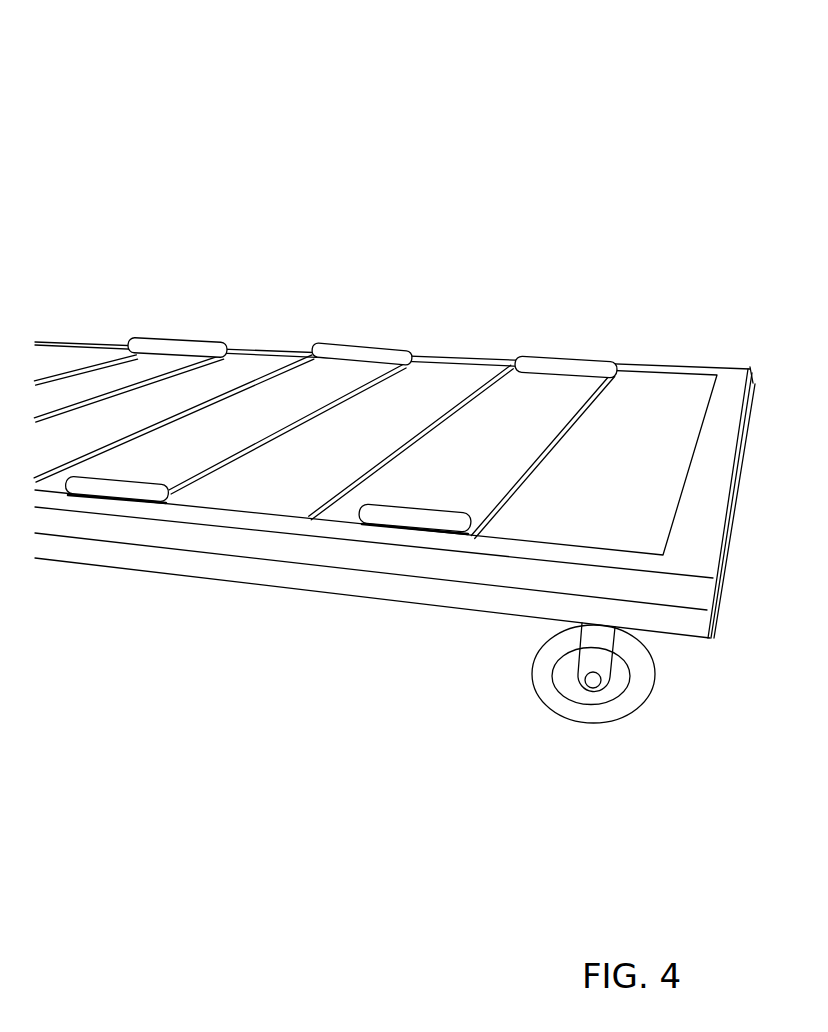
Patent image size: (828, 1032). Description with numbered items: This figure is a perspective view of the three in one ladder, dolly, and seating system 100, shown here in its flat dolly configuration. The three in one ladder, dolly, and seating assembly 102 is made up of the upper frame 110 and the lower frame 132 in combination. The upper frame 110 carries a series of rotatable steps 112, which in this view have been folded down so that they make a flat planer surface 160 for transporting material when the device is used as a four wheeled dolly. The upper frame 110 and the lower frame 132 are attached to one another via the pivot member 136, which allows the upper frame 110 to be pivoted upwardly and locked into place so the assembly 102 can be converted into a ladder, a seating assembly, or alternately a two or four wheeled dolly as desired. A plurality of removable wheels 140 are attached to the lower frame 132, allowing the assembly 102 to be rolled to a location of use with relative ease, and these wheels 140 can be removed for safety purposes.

The 3 in 1 ladder, dolly, and seating system 100 is at (603, 97).
The 3 in 1 ladder, dolly, and seating assembly 102 is at (625, 128).
The upper frame 110 is at (335, 553).
The series of rotatable steps 112 is at (235, 372).
The flat planer surface 160 is at (423, 380).
The lower frame 132 is at (145, 577).
The pivot member 136 is at (725, 566).
The plurality of removable wheels 140 is at (582, 726).